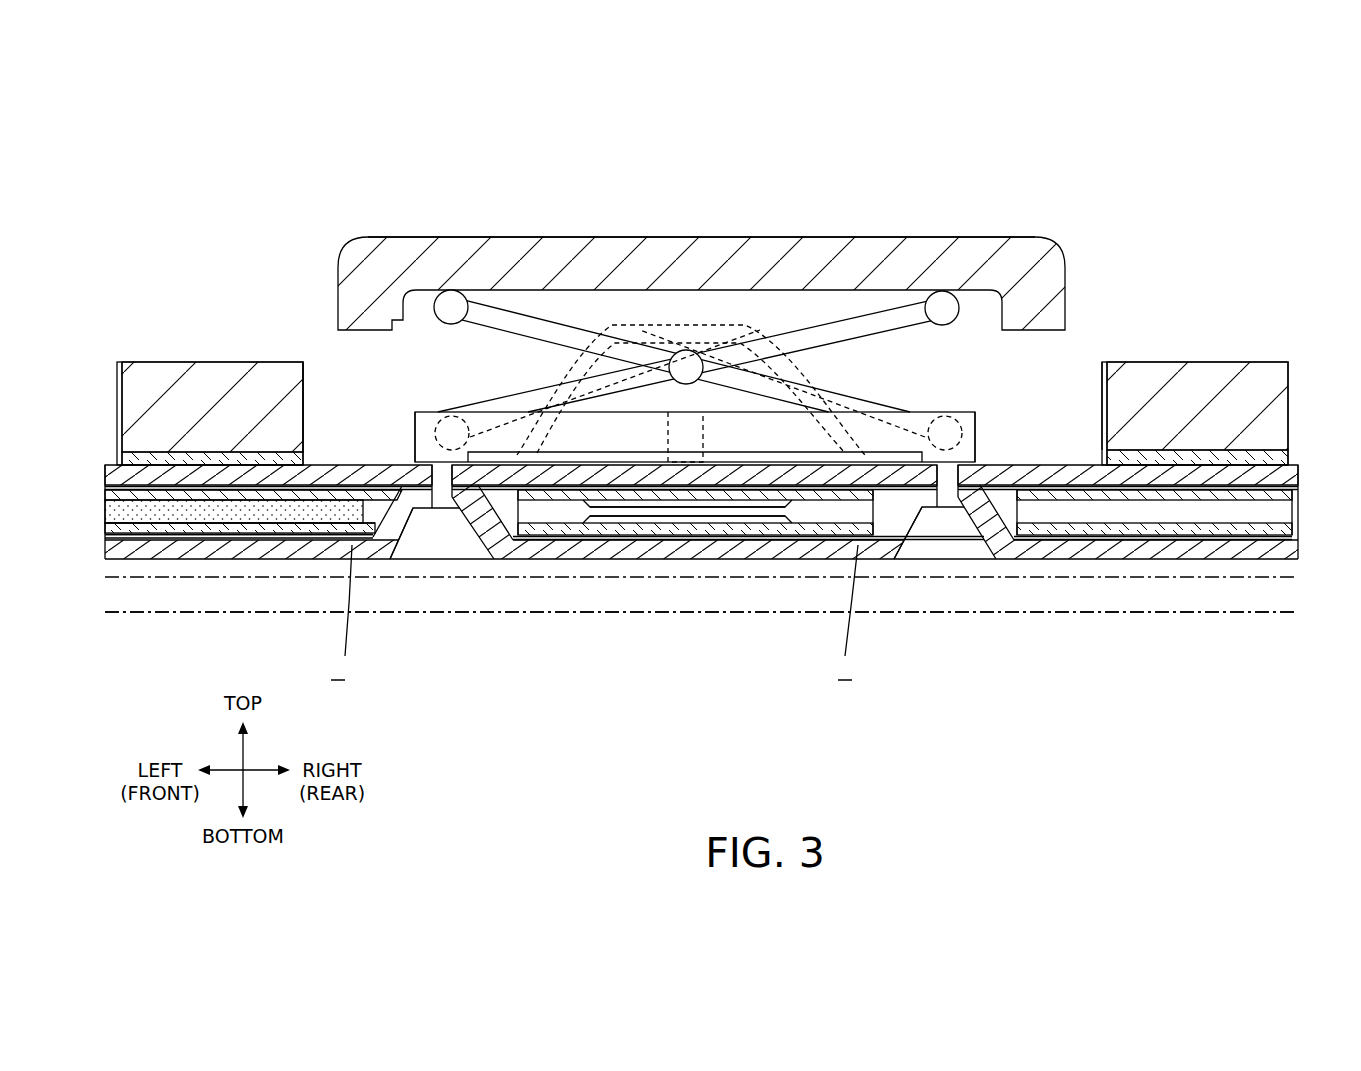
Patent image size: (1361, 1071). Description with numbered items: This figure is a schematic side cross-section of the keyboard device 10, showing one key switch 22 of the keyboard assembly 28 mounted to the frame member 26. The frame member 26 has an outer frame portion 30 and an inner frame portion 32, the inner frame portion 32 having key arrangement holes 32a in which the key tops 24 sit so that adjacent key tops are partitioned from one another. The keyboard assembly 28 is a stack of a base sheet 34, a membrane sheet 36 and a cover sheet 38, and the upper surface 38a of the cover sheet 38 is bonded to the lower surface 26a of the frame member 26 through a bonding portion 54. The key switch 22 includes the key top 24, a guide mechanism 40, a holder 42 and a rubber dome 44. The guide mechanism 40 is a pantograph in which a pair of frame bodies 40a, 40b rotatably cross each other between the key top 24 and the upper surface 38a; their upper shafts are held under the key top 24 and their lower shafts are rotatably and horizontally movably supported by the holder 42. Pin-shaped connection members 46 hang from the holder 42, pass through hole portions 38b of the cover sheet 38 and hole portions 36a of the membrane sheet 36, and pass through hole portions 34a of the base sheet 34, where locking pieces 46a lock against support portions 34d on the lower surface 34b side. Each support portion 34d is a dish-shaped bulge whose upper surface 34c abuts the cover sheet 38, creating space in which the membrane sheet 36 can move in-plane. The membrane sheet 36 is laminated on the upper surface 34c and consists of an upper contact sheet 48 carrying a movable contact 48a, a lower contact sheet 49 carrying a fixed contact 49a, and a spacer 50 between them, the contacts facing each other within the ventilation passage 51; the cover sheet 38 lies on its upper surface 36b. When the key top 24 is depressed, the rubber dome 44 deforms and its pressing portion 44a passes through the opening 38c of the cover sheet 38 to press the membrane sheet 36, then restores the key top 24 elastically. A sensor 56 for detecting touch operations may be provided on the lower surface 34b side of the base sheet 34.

The keyboard device 10 is at (707, 381).
The key switch 22 is at (701, 244).
The key top 24 is at (745, 237).
The frame member 26 is at (702, 380).
The lower surface of the frame member 26a is at (190, 458).
The keyboard assembly 28 is at (837, 381).
The outer frame portion 30 is at (702, 380).
The inner frame portion 32 is at (702, 380).
The key arrangement hole 32a is at (303, 366).
The base sheet 34 is at (714, 540).
The hole portion of the base sheet 34a is at (498, 522).
The lower surface of the base sheet 34b is at (1100, 560).
The upper surface of the base sheet 34c is at (1197, 527).
The support portion 34d is at (392, 480).
The membrane sheet 36 is at (725, 550).
The hole portion of the membrane sheet 36a is at (524, 510).
The upper surface of the membrane sheet 36b is at (1023, 500).
The cover sheet 38 is at (852, 510).
The upper surface of the cover sheet 38a is at (1073, 462).
The hole portion of the cover sheet 38b is at (428, 462).
The opening of the cover sheet 38c is at (697, 462).
The guide mechanism 40 is at (698, 283).
The frame body 40a is at (764, 377).
The frame body 40b is at (862, 327).
The holder 42 is at (431, 412).
The rubber dome 44 is at (691, 310).
The pressing portion 44a is at (668, 412).
The connection member 46 is at (667, 594).
The locking piece 46a is at (415, 547).
The upper contact sheet 48 is at (108, 510).
The movable contact 48a is at (600, 507).
The lower contact sheet 49 is at (104, 536).
The fixed contact 49a is at (660, 522).
The spacer 50 is at (106, 520).
The ventilation passage 51 is at (800, 540).
The bonding portion 54 is at (116, 378).
The sensor 56 is at (193, 614).